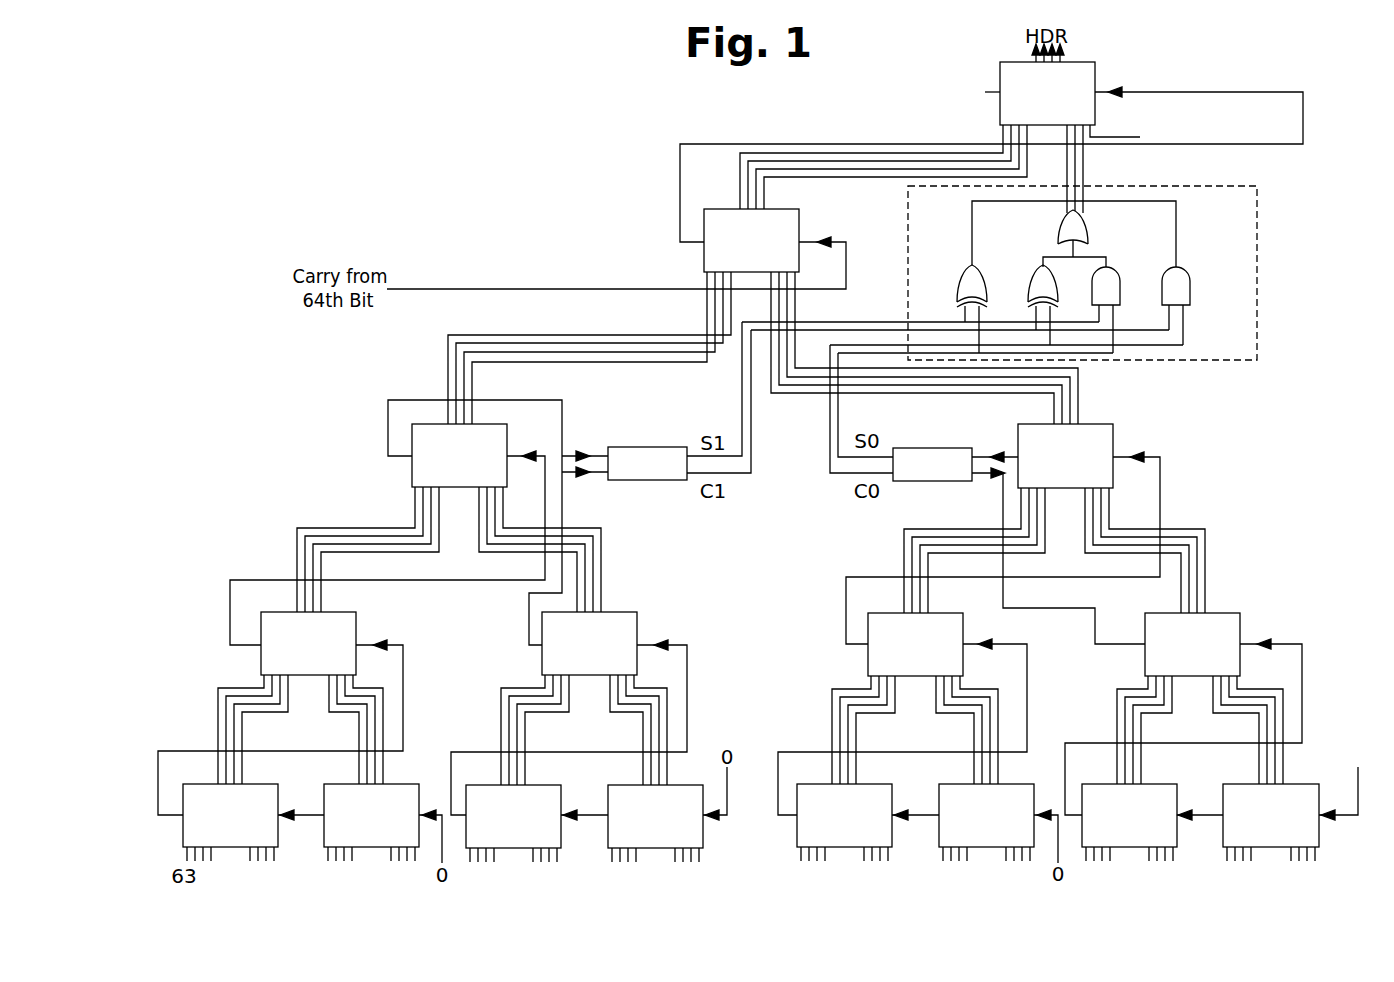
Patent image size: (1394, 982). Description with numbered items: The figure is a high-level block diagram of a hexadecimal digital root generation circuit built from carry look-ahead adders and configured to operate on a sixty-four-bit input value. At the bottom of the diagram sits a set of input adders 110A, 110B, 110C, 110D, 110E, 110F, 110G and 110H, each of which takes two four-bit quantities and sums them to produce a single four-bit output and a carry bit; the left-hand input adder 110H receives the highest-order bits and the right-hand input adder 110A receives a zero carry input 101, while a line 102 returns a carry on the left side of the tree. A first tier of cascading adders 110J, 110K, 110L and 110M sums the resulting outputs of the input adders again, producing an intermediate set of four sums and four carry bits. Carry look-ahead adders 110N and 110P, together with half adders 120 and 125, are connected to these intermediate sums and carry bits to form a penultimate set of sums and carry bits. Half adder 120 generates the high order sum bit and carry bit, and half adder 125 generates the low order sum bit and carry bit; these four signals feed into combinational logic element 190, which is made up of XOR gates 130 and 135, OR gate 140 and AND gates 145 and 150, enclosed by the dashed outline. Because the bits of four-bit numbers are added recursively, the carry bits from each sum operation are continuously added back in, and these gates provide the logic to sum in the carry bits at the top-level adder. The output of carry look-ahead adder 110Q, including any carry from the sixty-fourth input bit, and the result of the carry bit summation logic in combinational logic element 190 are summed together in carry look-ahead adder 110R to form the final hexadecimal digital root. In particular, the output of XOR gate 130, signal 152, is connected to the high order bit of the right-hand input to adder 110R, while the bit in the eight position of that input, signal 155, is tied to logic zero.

The input adder 110A is at (1245, 821).
The input adder 110B is at (1104, 821).
The input adder 110C is at (961, 821).
The input adder 110D is at (819, 821).
The input adder 110E is at (630, 822).
The input adder 110F is at (488, 822).
The input adder 110G is at (346, 821).
The input adder 110H is at (205, 821).
The carry look-ahead adder 110J is at (1167, 650).
The carry look-ahead adder 110K is at (890, 650).
The carry look-ahead adder 110L is at (564, 649).
The carry look-ahead adder 110M is at (283, 649).
The carry look-ahead adder 110N is at (1040, 461).
The carry look-ahead adder 110P is at (434, 461).
The carry look-ahead adder 110Q is at (726, 246).
The top-level carry look-ahead adder 110R is at (1022, 99).
The half adder 120 is at (630, 475).
The half adder 125 is at (915, 476).
The XOR gate 130 is at (969, 262).
The XOR gate 135 is at (1038, 262).
The OR gate 140 is at (1089, 222).
The AND gate 145 is at (1121, 266).
The AND gate 150 is at (1191, 268).
The signal 152 is at (971, 229).
The signal 155 is at (1110, 137).
The combinational logic element 190 is at (1262, 228).
The zero carry-in line 101 is at (1347, 812).
The carry feedback line 102 is at (172, 750).